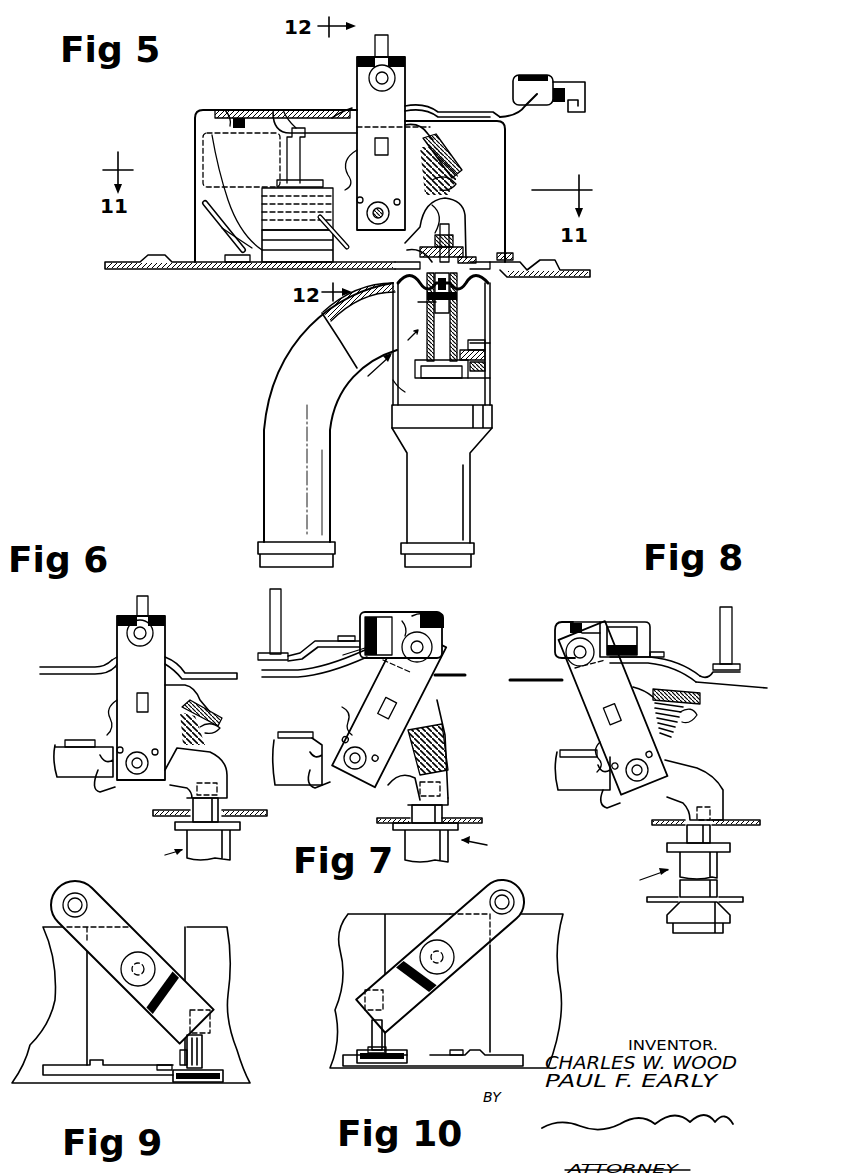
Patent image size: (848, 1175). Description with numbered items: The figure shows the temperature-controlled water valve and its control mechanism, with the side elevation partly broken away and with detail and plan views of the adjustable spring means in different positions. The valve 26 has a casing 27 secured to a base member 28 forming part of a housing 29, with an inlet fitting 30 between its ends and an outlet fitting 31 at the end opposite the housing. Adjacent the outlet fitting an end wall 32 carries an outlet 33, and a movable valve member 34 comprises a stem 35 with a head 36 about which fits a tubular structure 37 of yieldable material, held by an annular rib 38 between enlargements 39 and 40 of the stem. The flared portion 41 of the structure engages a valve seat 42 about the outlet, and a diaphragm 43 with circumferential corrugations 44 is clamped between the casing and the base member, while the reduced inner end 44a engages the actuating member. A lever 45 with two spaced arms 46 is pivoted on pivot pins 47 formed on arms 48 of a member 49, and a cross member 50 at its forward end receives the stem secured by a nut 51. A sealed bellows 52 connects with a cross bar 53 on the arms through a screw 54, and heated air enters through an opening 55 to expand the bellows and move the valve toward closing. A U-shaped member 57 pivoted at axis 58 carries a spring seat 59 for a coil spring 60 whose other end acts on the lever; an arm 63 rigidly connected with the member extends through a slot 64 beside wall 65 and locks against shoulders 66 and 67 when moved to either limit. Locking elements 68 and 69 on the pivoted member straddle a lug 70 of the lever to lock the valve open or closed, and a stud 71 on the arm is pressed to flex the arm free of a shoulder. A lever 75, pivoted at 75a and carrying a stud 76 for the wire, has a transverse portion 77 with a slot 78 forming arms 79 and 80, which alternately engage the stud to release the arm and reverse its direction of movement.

In FIG. 5, the valve 26 is at (507, 320).
In FIG. 5, the casing 27 is at (122, 272).
In FIG. 5, the base member 28 is at (315, 270).
In FIG. 6, the base member 28 is at (265, 815).
In FIG. 7, the base member 28 is at (483, 820).
In FIG. 8, the base member 28 is at (703, 861).
In FIG. 5, the housing 29 is at (497, 176).
In FIG. 5, the inlet fitting 30 is at (265, 476).
In FIG. 5, the outlet fitting 31 is at (470, 492).
In FIG. 5, the end wall 32 is at (488, 355).
In FIG. 5, the outlet 33 is at (488, 330).
In FIG. 5, the movable valve member 34 is at (375, 371).
In FIG. 6, the movable valve member 34 is at (163, 858).
In FIG. 7, the movable valve member 34 is at (450, 842).
In FIG. 8, the movable valve member 34 is at (673, 888).
In FIG. 5, the stem 35 is at (408, 327).
In FIG. 5, the head 36 is at (440, 372).
In FIG. 5, the tubular structure 37 is at (458, 300).
In FIG. 5, the annular rib 38 is at (428, 308).
In FIG. 5, the enlargement 39 is at (437, 300).
In FIG. 5, the enlargement 40 is at (398, 385).
In FIG. 6, the enlargement 40 is at (240, 830).
In FIG. 5, the flared portion 41 is at (488, 378).
In FIG. 5, the valve seat 42 is at (490, 365).
In FIG. 5, the diaphragm 43 is at (420, 250).
In FIG. 6, the diaphragm 43 is at (222, 810).
In FIG. 7, the diaphragm 43 is at (442, 828).
In FIG. 8, the diaphragm 43 is at (712, 835).
In FIG. 5, the circumferential corrugations 44 is at (487, 290).
In FIG. 5, the inner end 44a is at (465, 259).
In FIG. 5, the lever 45 is at (432, 205).
In FIG. 6, the lever 45 is at (212, 760).
In FIG. 8, the lever 45 is at (694, 790).
In FIG. 5, the lever arms 46 is at (240, 200).
In FIG. 6, the lever arms 46 is at (60, 770).
In FIG. 7, the lever arms 46 is at (285, 765).
In FIG. 8, the lever arms 46 is at (565, 780).
In FIG. 5, the pivot pins 47 is at (205, 205).
In FIG. 5, the arms 48 is at (218, 228).
In FIG. 5, the member 49 is at (236, 262).
In FIG. 5, the cross member 50 is at (454, 242).
In FIG. 6, the cross member 50 is at (197, 790).
In FIG. 5, the nut 51 is at (450, 236).
In FIG. 5, the sealed bellows 52 is at (283, 262).
In FIG. 5, the cross bar 53 is at (292, 167).
In FIG. 5, the screw 54 is at (303, 110).
In FIG. 5, the opening 55 is at (235, 138).
In FIG. 5, the U-shaped member 57 is at (415, 125).
In FIG. 6, the U-shaped member 57 is at (190, 698).
In FIG. 7, the U-shaped member 57 is at (425, 722).
In FIG. 8, the U-shaped member 57 is at (638, 688).
In FIG. 5, the axis 58 is at (380, 205).
In FIG. 6, the axis 58 is at (137, 770).
In FIG. 7, the axis 58 is at (352, 765).
In FIG. 8, the axis 58 is at (640, 790).
In FIG. 5, the spring seat 59 is at (452, 152).
In FIG. 6, the spring seat 59 is at (212, 715).
In FIG. 7, the spring seat 59 is at (447, 755).
In FIG. 8, the spring seat 59 is at (702, 697).
In FIG. 5, the coil spring 60 is at (457, 182).
In FIG. 6, the coil spring 60 is at (215, 729).
In FIG. 7, the coil spring 60 is at (410, 782).
In FIG. 8, the coil spring 60 is at (690, 712).
In FIG. 5, the arm 63 is at (403, 85).
In FIG. 6, the arm 63 is at (165, 645).
In FIG. 7, the arm 63 is at (412, 690).
In FIG. 8, the arm 63 is at (590, 706).
In FIG. 9, the arm 63 is at (165, 1082).
In FIG. 10, the arm 63 is at (392, 1050).
In FIG. 5, the slot 64 is at (305, 108).
In FIG. 6, the slot 64 is at (68, 667).
In FIG. 9, the slot 64 is at (95, 1060).
In FIG. 10, the slot 64 is at (500, 1055).
In FIG. 5, the wall 65 is at (240, 110).
In FIG. 7, the wall 65 is at (455, 675).
In FIG. 9, the wall 65 is at (222, 968).
In FIG. 10, the wall 65 is at (530, 997).
In FIG. 5, the shoulder 66 is at (350, 104).
In FIG. 6, the shoulder 66 is at (112, 661).
In FIG. 7, the shoulder 66 is at (335, 670).
In FIG. 8, the shoulder 66 is at (618, 660).
In FIG. 9, the shoulder 66 is at (115, 1070).
In FIG. 5, the shoulder 67 is at (430, 105).
In FIG. 6, the shoulder 67 is at (180, 663).
In FIG. 7, the shoulder 67 is at (375, 665).
In FIG. 8, the shoulder 67 is at (668, 660).
In FIG. 10, the shoulder 67 is at (455, 1052).
In FIG. 5, the locking element 68 is at (350, 165).
In FIG. 6, the locking element 68 is at (110, 707).
In FIG. 7, the locking element 68 is at (342, 707).
In FIG. 8, the locking element 68 is at (597, 742).
In FIG. 5, the locking element 69 is at (342, 232).
In FIG. 6, the locking element 69 is at (98, 780).
In FIG. 7, the locking element 69 is at (310, 770).
In FIG. 8, the locking element 69 is at (603, 800).
In FIG. 5, the lug 70 is at (268, 195).
In FIG. 6, the lug 70 is at (75, 742).
In FIG. 7, the lug 70 is at (292, 732).
In FIG. 8, the lug 70 is at (562, 768).
In FIG. 5, the stud 71 is at (388, 72).
In FIG. 6, the stud 71 is at (152, 633).
In FIG. 7, the stud 71 is at (433, 647).
In FIG. 8, the stud 71 is at (580, 652).
In FIG. 9, the stud 71 is at (203, 1050).
In FIG. 10, the stud 71 is at (370, 1030).
In FIG. 7, the lever 75 is at (322, 641).
In FIG. 8, the lever 75 is at (630, 623).
In FIG. 9, the lever 75 is at (115, 925).
In FIG. 10, the lever 75 is at (480, 897).
In FIG. 7, the pivot 75a is at (348, 636).
In FIG. 8, the pivot 75a is at (657, 652).
In FIG. 9, the pivot 75a is at (142, 962).
In FIG. 10, the pivot 75a is at (437, 920).
In FIG. 5, the stud 76 is at (390, 37).
In FIG. 6, the stud 76 is at (150, 607).
In FIG. 7, the stud 76 is at (282, 625).
In FIG. 8, the stud 76 is at (722, 623).
In FIG. 9, the stud 76 is at (95, 900).
In FIG. 10, the stud 76 is at (517, 902).
In FIG. 7, the transverse portion 77 is at (425, 613).
In FIG. 7, the slot 78 is at (438, 614).
In FIG. 8, the slot 78 is at (578, 625).
In FIG. 7, the arm 79 is at (418, 622).
In FIG. 8, the arm 79 is at (556, 637).
In FIG. 9, the arm 79 is at (183, 1053).
In FIG. 10, the arm 79 is at (357, 1000).
In FIG. 7, the arm 80 is at (440, 635).
In FIG. 8, the arm 80 is at (593, 622).
In FIG. 9, the arm 80 is at (210, 1020).
In FIG. 10, the arm 80 is at (380, 1022).